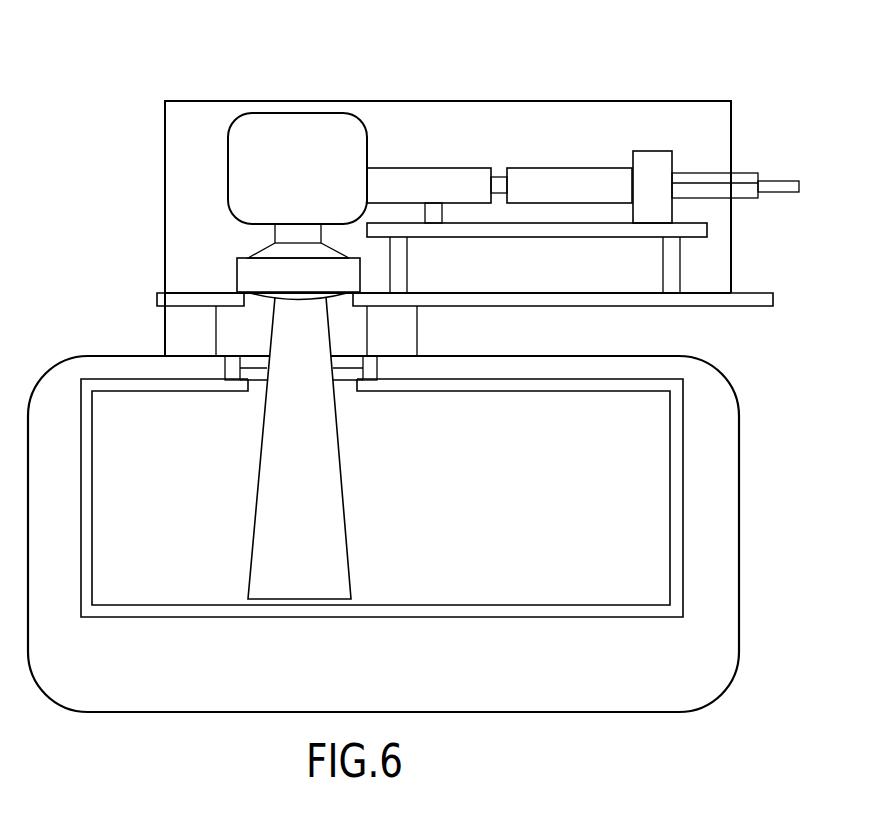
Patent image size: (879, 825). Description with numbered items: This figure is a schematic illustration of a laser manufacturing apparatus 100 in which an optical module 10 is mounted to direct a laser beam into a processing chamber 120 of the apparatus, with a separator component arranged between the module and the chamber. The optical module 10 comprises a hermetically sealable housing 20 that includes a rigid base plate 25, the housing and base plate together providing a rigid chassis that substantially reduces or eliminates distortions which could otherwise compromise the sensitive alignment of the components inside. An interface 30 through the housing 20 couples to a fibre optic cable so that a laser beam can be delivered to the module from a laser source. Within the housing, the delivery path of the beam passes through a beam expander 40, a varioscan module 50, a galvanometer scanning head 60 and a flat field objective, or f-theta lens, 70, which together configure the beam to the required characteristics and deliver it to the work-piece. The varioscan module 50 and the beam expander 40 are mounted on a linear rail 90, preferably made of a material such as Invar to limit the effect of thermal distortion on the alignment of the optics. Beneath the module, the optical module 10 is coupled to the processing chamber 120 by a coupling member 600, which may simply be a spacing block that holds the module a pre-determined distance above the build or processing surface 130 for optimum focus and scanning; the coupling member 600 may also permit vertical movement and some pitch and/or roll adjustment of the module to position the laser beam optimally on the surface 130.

The optical module 10 is at (567, 99).
The hermetically sealable housing 20 is at (165, 173).
The rigid base plate 25 is at (628, 307).
The interface 30 is at (735, 172).
The beam expander 40 is at (558, 168).
The varioscan module 50 is at (432, 168).
The galvanometer scanning head 60 is at (321, 112).
The flat field objective (f-theta lens) 70 is at (257, 278).
The linear rail 90 is at (557, 237).
The laser manufacturing apparatus 100 is at (738, 365).
The processing chamber 120 is at (584, 498).
The build or processing surface 130 is at (350, 603).
The coupling member 600 is at (174, 327).